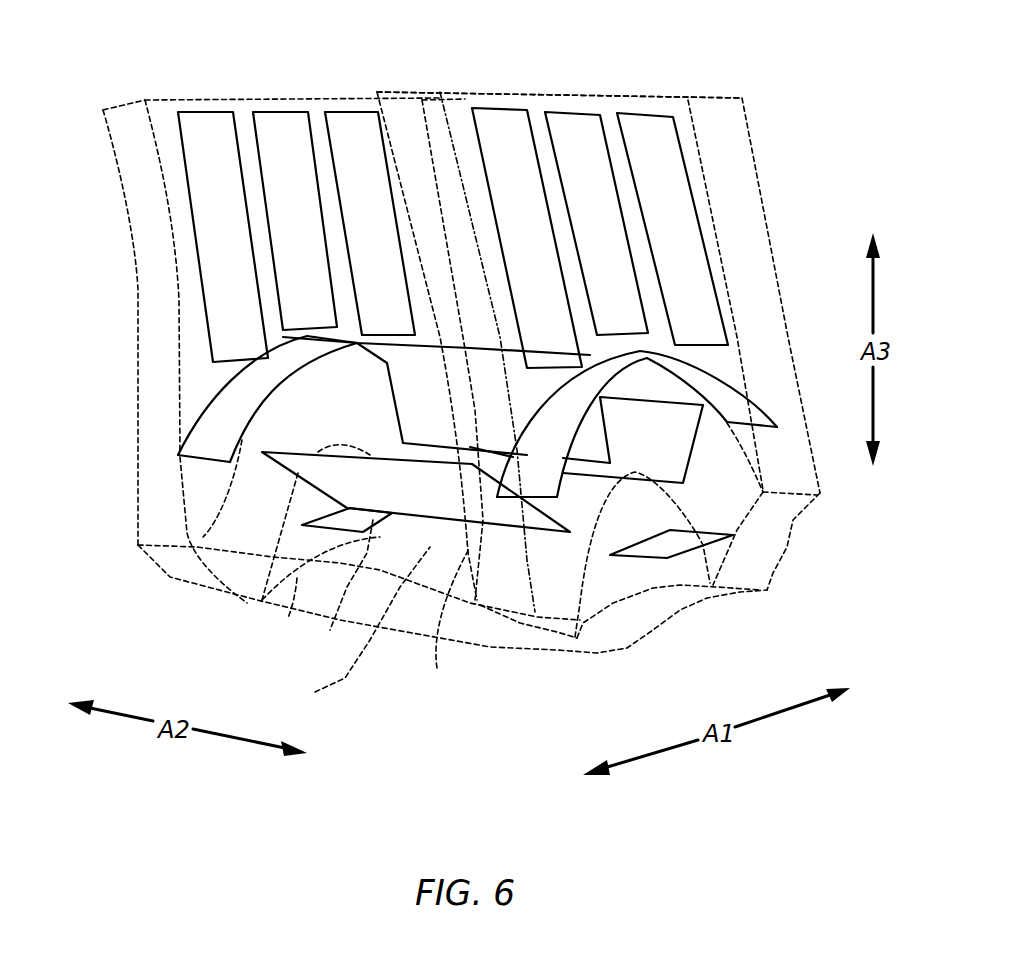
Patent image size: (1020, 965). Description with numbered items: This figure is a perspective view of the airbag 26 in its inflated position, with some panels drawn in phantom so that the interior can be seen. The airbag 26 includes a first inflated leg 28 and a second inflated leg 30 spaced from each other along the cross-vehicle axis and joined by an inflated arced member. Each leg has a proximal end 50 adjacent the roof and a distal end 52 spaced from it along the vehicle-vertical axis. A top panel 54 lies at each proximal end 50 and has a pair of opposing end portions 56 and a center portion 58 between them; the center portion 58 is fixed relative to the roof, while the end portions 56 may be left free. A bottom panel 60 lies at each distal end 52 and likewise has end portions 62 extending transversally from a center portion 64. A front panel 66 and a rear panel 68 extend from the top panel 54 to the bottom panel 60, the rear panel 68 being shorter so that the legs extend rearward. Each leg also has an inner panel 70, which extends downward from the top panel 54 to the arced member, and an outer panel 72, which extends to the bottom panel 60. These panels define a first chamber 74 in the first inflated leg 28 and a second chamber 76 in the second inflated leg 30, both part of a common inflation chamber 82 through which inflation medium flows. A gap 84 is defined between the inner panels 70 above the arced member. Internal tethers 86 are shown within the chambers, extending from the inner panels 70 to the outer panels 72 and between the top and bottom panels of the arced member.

The airbag 26 is at (792, 147).
The first inflated leg 28 is at (770, 323).
The second inflated leg 30 is at (155, 280).
The proximal end 50 is at (205, 98).
The distal end 52 is at (138, 545).
The top panel 54 is at (240, 97).
The end portions 56 is at (127, 103).
The center portion 58 is at (280, 97).
The bottom panel 60 is at (263, 603).
The end portions 62 is at (170, 577).
The center portion 64 is at (710, 605).
The front panel 66 is at (138, 383).
The rear panel 68 is at (773, 272).
The inner panel 70 is at (158, 120).
The outer panel 72 is at (655, 97).
The first chamber 74 is at (743, 220).
The second chamber 76 is at (175, 170).
The common inflation chamber 82 is at (468, 443).
The gap 84 is at (330, 630).
The internal tethers 86 is at (237, 243).